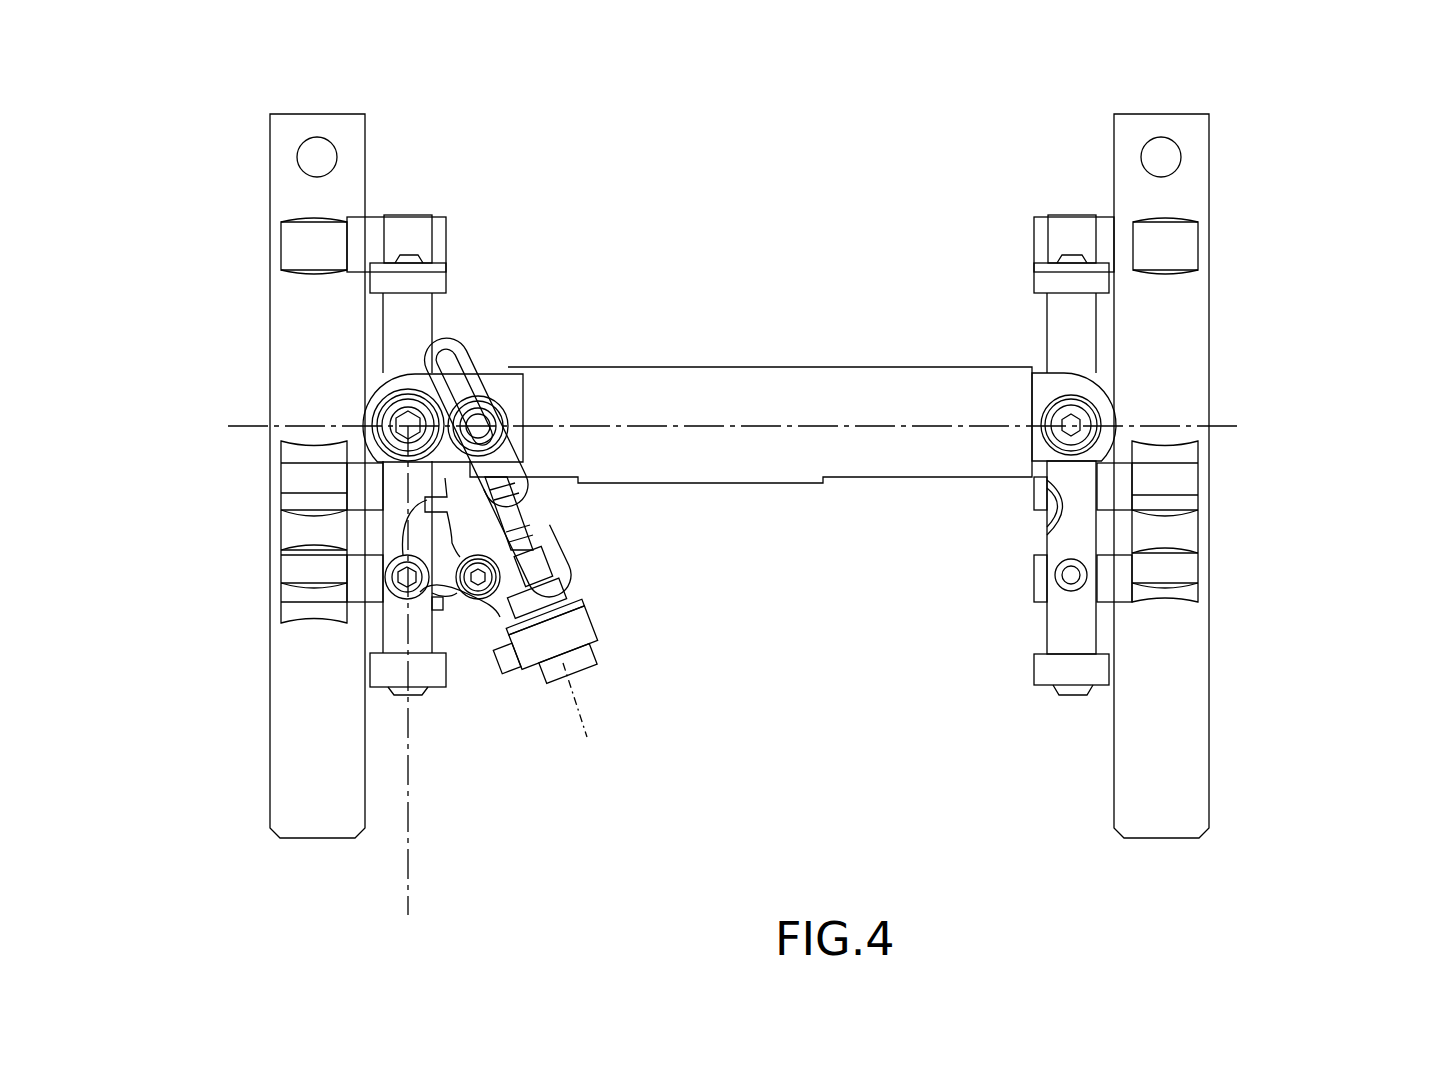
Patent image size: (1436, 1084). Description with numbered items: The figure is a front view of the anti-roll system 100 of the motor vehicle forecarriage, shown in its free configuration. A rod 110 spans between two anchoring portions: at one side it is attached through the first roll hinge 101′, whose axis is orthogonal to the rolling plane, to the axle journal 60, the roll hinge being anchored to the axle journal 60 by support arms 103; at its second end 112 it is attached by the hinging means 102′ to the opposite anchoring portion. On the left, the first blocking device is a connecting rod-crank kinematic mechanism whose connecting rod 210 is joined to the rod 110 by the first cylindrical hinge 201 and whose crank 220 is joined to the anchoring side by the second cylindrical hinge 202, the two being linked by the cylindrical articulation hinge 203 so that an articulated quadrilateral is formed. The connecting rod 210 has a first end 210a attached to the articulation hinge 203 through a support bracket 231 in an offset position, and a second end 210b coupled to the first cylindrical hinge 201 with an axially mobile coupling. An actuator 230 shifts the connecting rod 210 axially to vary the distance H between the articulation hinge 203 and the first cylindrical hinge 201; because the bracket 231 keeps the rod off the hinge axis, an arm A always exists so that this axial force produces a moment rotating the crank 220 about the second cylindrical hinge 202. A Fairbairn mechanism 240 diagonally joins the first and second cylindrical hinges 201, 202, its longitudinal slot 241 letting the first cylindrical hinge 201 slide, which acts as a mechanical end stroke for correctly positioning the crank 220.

The axle journal 60 is at (282, 132).
The support arms 103 is at (368, 240).
The first roll hinge 101′ is at (367, 413).
The second end 112 is at (1112, 394).
The connecting rod 210 is at (567, 489).
The first end 210a is at (585, 640).
The second end 210b is at (513, 478).
The rod 110 is at (996, 503).
The anti-roll system 100 is at (900, 588).
The Fairbairn mechanism 240 is at (532, 382).
The longitudinal slot 241 is at (508, 350).
The first cylindrical hinge 201 is at (475, 396).
The second cylindrical hinge 202 is at (387, 580).
The crank 220 is at (443, 583).
The cylindrical articulation hinge 203 is at (453, 590).
The support bracket 231 is at (500, 613).
The actuator 230 is at (530, 648).
The distance H is at (478, 430).
The arm A is at (480, 577).
The hinging means 102′ is at (1120, 440).